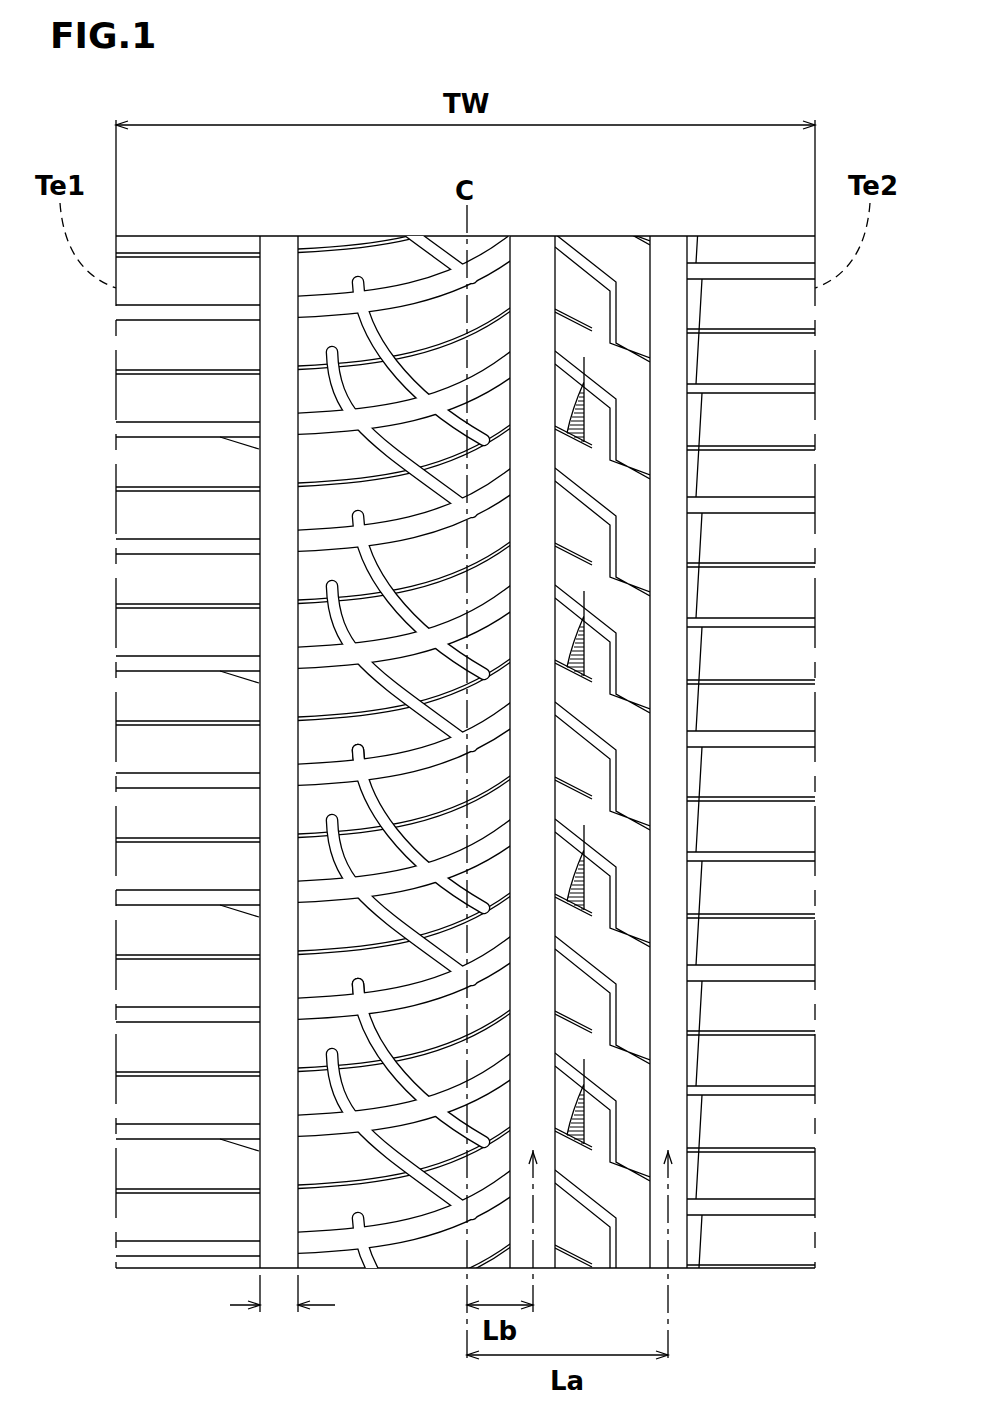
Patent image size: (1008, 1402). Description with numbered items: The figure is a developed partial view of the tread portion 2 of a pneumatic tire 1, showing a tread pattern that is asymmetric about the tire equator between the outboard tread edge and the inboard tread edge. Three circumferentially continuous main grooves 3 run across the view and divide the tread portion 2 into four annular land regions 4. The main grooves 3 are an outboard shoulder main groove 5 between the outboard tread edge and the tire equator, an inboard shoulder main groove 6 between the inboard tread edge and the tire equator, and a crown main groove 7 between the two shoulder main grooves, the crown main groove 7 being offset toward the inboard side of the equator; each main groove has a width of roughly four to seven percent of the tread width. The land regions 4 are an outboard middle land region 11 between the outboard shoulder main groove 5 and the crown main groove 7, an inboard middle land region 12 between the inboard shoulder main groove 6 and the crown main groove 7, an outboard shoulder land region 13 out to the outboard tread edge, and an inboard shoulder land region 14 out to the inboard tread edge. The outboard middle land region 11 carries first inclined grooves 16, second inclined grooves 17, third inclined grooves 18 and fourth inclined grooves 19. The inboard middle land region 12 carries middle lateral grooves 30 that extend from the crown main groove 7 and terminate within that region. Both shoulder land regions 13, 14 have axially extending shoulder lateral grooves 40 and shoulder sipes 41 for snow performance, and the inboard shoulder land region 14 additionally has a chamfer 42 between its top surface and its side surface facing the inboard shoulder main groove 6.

The pneumatic tire 1 is at (710, 215).
The tread portion 2 is at (228, 215).
The main grooves 3 is at (278, 420).
The annular land regions 4 is at (282, 747).
The outboard shoulder main groove 5 is at (278, 288).
The inboard shoulder main groove 6 is at (668, 283).
The crown main groove 7 is at (530, 283).
The outboard middle land region 11 is at (383, 275).
The inboard middle land region 12 is at (722, 707).
The outboard shoulder land region 13 is at (185, 283).
The inboard shoulder land region 14 is at (752, 305).
The first inclined grooves 16 is at (385, 455).
The second inclined grooves 17 is at (410, 600).
The third inclined grooves 18 is at (385, 875).
The fourth inclined grooves 19 is at (335, 775).
The middle lateral grooves 30 is at (590, 855).
The shoulder lateral grooves 40 is at (185, 1130).
The shoulder sipes 41 is at (185, 1190).
The chamfer 42 is at (697, 650).